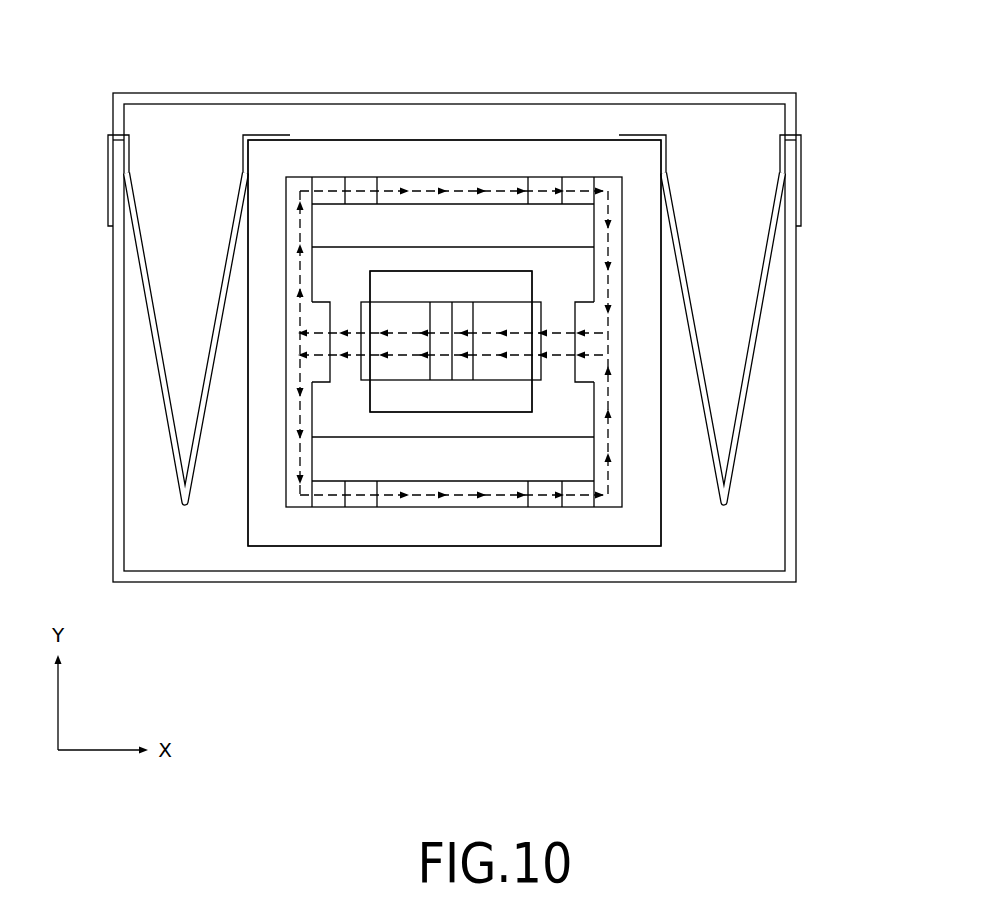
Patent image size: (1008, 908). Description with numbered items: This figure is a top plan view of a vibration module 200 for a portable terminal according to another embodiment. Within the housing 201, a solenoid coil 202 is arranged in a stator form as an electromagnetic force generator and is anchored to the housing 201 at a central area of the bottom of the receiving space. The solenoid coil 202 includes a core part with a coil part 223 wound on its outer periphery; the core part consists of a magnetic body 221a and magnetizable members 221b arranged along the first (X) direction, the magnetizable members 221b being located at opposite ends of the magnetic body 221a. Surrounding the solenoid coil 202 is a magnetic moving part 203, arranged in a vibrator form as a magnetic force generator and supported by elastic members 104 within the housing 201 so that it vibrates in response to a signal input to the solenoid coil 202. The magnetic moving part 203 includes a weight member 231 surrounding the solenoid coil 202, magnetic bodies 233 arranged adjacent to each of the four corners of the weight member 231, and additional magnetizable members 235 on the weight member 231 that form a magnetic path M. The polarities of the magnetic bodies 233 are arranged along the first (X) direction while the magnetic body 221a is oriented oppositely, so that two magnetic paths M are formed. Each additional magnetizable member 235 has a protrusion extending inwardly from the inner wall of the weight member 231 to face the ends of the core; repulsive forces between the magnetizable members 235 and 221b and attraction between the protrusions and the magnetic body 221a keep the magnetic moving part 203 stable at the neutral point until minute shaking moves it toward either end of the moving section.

The vibration module 200 is at (200, 44).
The housing 201 is at (693, 100).
The elastic members 104 is at (148, 391).
The magnetic moving part 203 is at (247, 531).
The weight member 231 is at (627, 525).
The additional magnetizable member 235 is at (617, 463).
The magnetic bodies 233 is at (360, 177).
The coil part 223 is at (453, 283).
The solenoid coil 202 is at (401, 430).
The magnetic body 221a is at (462, 372).
The magnetizable members 221b is at (387, 372).
The magnetic path M is at (610, 253).